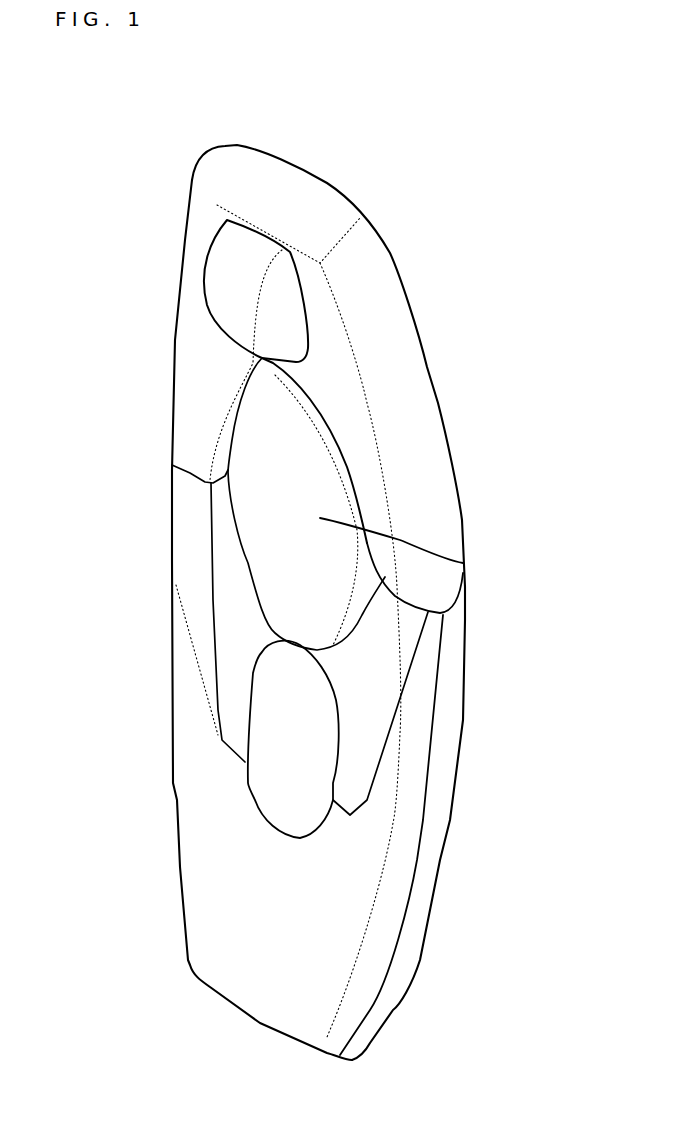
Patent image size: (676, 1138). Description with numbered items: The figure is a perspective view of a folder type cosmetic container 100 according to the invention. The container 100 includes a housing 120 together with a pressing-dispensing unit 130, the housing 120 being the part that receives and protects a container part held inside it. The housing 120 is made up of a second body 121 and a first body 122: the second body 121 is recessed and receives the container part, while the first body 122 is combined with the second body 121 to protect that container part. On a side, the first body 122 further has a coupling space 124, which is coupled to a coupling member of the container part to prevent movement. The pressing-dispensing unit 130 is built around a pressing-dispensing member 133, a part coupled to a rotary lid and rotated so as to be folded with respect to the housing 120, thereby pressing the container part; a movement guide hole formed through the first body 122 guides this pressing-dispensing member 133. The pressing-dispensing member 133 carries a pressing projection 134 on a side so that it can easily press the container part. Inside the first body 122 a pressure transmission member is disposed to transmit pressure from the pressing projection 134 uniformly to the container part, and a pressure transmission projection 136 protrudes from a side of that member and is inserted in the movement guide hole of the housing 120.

The folder type cosmetic container 100 is at (174, 121).
The housing 120 is at (464, 724).
The second body 121 is at (458, 783).
The first body 122 is at (193, 817).
The coupling space 124 is at (463, 563).
The pressing-dispensing unit 130 is at (176, 206).
The pressing-dispensing member 133 is at (175, 377).
The pressing projection 134 is at (200, 268).
The pressure transmission projection 136 is at (272, 713).